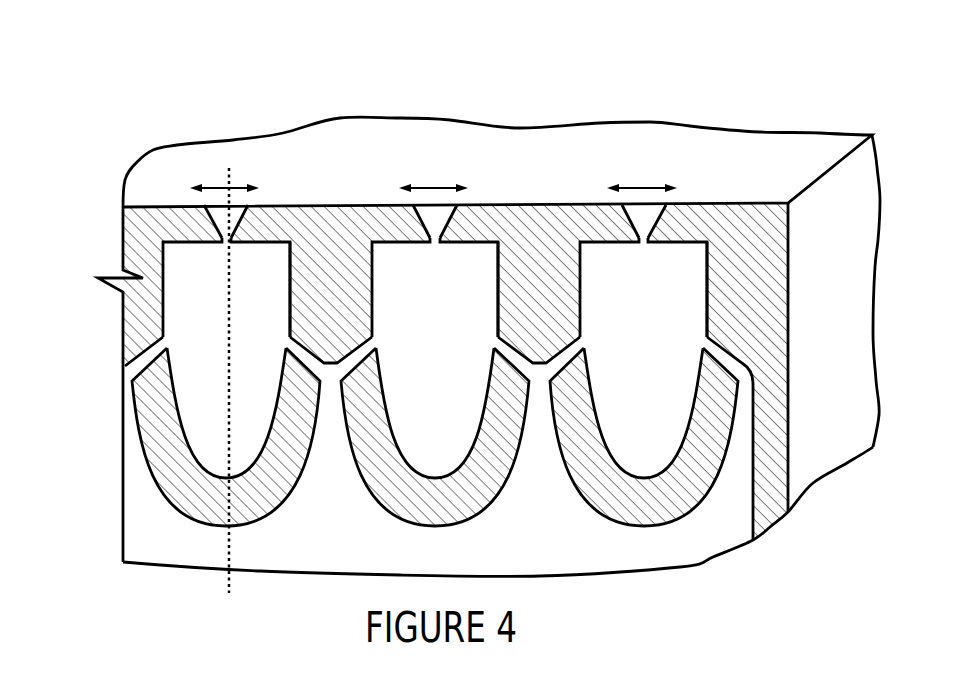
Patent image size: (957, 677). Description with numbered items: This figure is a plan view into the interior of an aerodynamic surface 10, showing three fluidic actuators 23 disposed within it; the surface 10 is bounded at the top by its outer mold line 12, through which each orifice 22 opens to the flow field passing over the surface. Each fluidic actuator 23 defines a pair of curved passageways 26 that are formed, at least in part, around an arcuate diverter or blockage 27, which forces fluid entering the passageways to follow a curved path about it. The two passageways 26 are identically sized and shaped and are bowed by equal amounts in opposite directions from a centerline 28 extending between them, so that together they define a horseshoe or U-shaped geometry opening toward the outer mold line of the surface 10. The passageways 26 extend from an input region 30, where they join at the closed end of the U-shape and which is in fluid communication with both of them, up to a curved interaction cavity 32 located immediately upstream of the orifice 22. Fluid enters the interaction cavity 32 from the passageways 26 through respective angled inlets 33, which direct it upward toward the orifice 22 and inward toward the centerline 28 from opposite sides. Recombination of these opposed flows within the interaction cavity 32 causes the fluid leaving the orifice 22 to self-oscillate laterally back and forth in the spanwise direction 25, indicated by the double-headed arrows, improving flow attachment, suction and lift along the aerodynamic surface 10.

The aerodynamic surface 10 is at (752, 100).
The top surface 12 is at (550, 140).
The orifice 22 is at (242, 216).
The fluidic actuator 23 is at (182, 265).
The spanwise direction 25 is at (238, 188).
The curved passageways 26 is at (148, 492).
The diverter or blockage 27 is at (200, 473).
The centerline 28 is at (230, 583).
The input region 30 is at (307, 563).
The interaction cavity 32 is at (263, 285).
The angled inlets 33 is at (163, 344).